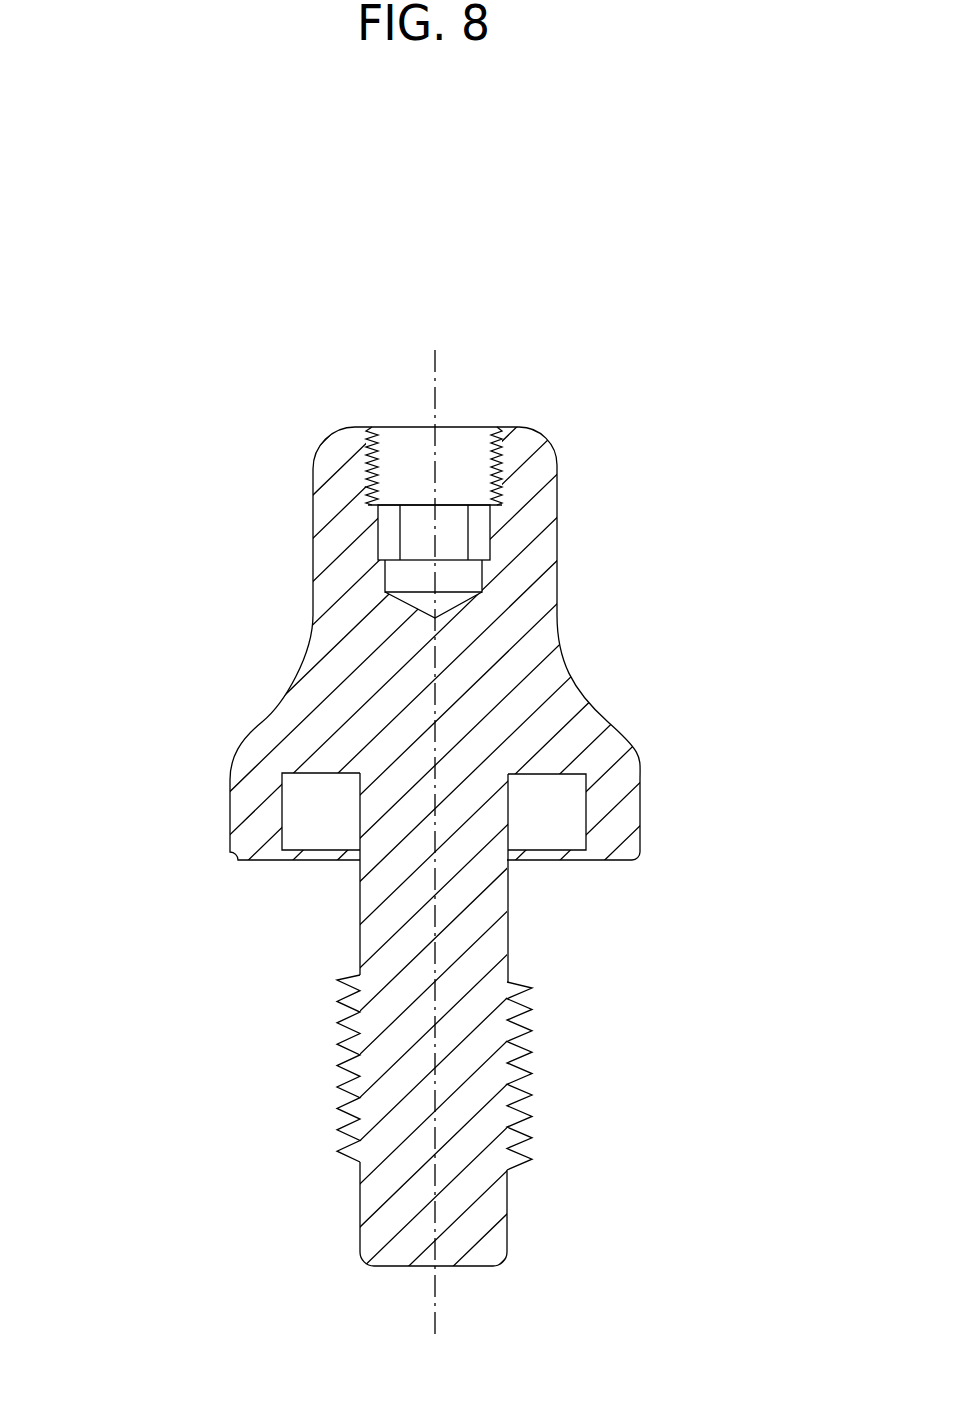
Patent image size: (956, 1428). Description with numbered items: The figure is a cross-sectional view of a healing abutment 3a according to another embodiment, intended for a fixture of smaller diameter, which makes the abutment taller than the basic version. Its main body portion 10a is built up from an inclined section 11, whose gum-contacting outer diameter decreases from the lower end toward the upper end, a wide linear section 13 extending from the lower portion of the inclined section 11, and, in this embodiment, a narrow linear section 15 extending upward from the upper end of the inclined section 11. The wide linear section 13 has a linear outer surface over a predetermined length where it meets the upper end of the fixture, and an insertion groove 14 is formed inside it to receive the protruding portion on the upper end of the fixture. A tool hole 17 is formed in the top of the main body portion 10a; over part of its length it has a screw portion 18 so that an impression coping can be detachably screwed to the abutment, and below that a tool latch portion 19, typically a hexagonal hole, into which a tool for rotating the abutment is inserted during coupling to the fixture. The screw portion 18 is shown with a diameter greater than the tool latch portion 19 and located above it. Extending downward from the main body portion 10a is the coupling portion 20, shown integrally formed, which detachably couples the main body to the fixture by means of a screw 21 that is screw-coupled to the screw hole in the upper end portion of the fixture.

The healing abutment 3a is at (112, 406).
The main body portion 10a is at (753, 573).
The inclined section 11 is at (580, 700).
The wide linear section 13 is at (641, 836).
The insertion groove 14 is at (305, 817).
The narrow linear section 15 is at (557, 569).
The tool hole 17 is at (463, 430).
The screw portion 18 is at (497, 430).
The tool latch portion 19 is at (490, 530).
The coupling portion 20 is at (512, 933).
The screw 21 is at (507, 1083).